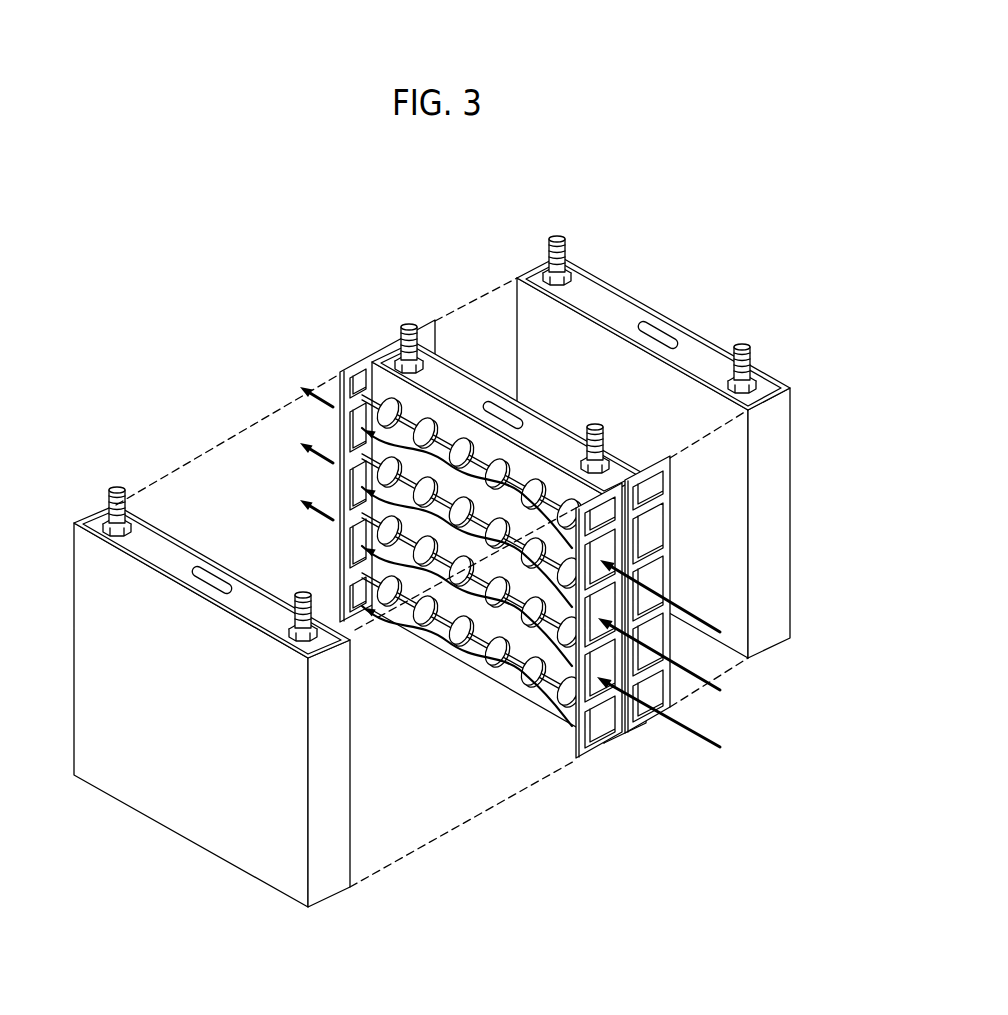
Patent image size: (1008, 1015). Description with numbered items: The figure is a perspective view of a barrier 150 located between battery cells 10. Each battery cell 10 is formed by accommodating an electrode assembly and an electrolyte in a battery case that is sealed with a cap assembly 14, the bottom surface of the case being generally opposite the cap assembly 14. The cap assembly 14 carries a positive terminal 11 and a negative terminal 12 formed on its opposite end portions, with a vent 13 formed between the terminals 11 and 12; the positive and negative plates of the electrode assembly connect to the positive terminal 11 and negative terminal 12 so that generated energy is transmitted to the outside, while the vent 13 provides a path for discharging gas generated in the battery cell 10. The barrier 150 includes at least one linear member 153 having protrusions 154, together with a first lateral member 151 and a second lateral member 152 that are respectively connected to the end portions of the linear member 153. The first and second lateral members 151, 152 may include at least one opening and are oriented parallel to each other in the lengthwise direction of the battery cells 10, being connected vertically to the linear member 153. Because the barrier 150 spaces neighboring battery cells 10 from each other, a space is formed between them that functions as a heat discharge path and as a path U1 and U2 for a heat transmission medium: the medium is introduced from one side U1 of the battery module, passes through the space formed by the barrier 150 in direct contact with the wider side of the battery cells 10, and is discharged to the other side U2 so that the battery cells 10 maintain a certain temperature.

The battery cell 10 is at (787, 621).
The positive terminal 11 is at (408, 323).
The negative terminal 12 is at (596, 425).
The vent 13 is at (508, 420).
The cap assembly 14 is at (450, 380).
The barrier 150 is at (600, 763).
The first lateral member 151 is at (340, 540).
The second lateral member 152 is at (672, 652).
The linear member 153 is at (507, 667).
The protrusion 154 is at (533, 682).
The one side of the battery module (inlet path) U1 is at (674, 653).
The another side of the battery module (outlet path) U2 is at (417, 556).